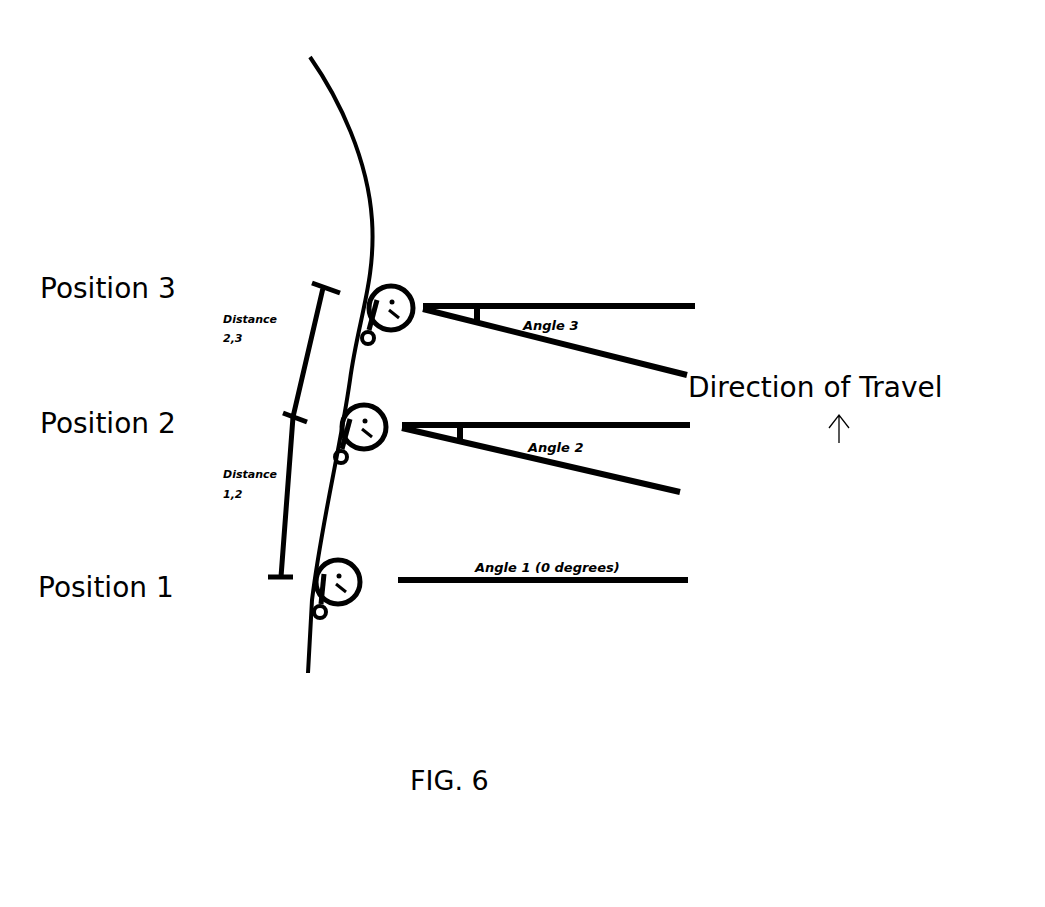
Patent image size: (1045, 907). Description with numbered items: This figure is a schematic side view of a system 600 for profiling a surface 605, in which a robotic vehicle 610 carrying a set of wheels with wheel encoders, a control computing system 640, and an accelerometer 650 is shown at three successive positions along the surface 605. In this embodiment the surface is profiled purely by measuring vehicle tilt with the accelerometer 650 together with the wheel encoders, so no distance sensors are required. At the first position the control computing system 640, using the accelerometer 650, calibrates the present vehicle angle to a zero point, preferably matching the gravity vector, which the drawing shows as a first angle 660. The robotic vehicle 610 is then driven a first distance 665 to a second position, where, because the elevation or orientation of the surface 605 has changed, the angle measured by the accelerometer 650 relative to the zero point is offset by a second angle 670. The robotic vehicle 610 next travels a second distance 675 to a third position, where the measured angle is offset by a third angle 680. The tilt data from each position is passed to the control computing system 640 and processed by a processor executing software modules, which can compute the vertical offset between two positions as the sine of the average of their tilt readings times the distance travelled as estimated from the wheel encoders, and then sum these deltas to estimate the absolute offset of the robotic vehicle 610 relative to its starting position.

The system 600 is at (99, 146).
The surface 605 is at (345, 112).
The robotic vehicle 610 is at (357, 595).
The control computing system 640 is at (338, 600).
The accelerometer 650 is at (310, 592).
The first angle 660 is at (600, 595).
The second angle 670 is at (533, 471).
The third angle 680 is at (533, 305).
The first distance 665 is at (285, 530).
The second distance 675 is at (302, 370).